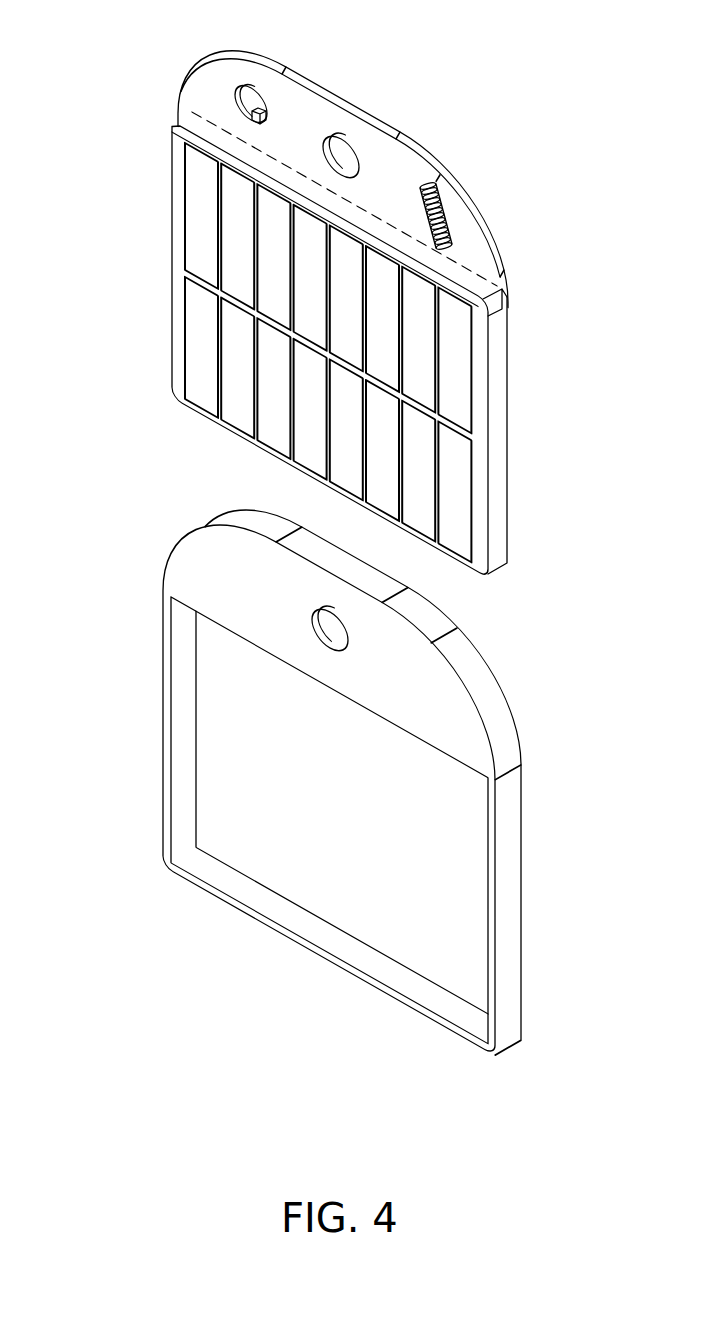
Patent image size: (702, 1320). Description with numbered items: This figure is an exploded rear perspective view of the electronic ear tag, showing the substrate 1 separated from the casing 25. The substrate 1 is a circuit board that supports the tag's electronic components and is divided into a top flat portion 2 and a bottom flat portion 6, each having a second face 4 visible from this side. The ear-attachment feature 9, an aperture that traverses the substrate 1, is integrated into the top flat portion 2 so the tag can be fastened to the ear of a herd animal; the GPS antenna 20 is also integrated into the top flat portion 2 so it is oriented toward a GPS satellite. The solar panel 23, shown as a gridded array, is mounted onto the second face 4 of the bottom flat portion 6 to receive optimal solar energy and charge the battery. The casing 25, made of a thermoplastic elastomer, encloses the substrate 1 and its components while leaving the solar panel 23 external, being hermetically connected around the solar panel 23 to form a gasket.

The substrate 1 is at (98, 82).
The top flat portion 2 is at (484, 270).
The second face 4 is at (400, 194).
The bottom flat portion 6 is at (505, 387).
The ear-attachment feature 9 is at (333, 158).
The GPS antenna 20 is at (250, 117).
The solar panel 23 is at (176, 282).
The casing 25 is at (165, 582).